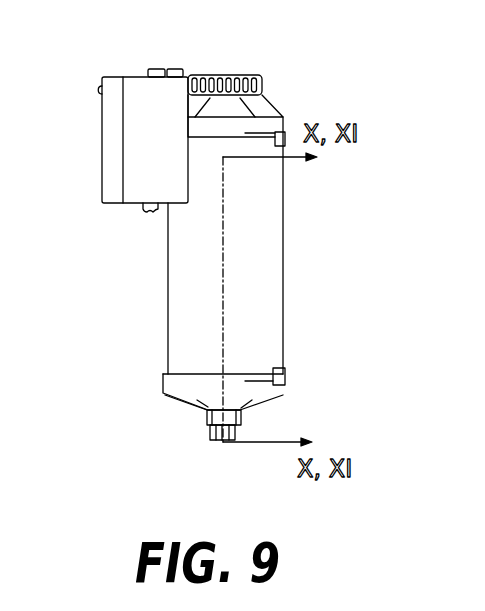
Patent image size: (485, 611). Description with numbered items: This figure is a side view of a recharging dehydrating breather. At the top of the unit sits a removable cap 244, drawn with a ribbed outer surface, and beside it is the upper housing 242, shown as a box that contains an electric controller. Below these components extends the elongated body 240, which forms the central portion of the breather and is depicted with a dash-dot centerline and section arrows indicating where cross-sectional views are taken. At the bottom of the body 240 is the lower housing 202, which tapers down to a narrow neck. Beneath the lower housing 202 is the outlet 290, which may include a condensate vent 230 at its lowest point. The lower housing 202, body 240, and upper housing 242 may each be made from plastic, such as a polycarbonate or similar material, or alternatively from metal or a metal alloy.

The lower housing 202 is at (172, 390).
The condensate vent 230 is at (200, 451).
The body 240 is at (181, 262).
The upper housing 242 is at (108, 150).
The removable cap 244 is at (261, 88).
The outlet 290 is at (239, 461).